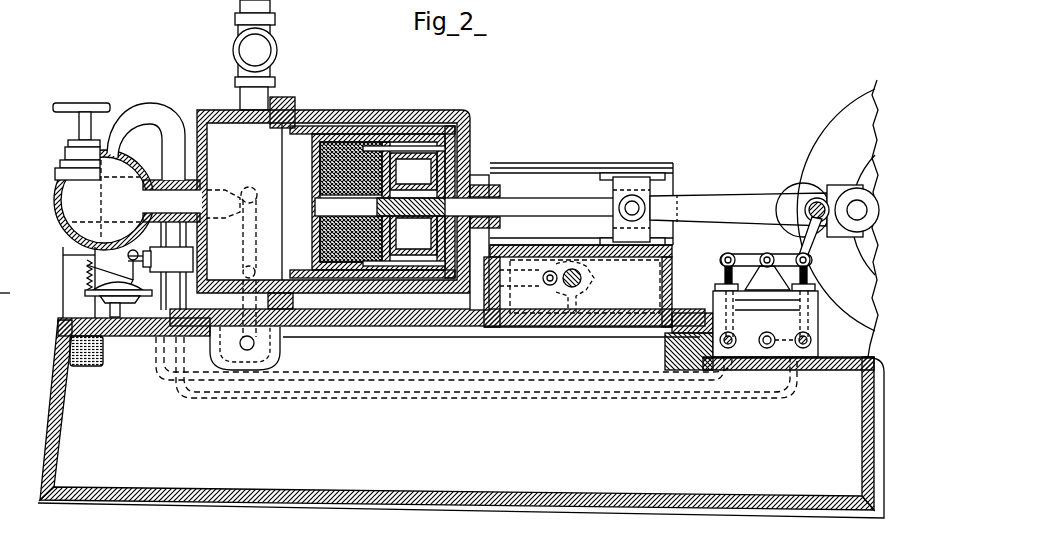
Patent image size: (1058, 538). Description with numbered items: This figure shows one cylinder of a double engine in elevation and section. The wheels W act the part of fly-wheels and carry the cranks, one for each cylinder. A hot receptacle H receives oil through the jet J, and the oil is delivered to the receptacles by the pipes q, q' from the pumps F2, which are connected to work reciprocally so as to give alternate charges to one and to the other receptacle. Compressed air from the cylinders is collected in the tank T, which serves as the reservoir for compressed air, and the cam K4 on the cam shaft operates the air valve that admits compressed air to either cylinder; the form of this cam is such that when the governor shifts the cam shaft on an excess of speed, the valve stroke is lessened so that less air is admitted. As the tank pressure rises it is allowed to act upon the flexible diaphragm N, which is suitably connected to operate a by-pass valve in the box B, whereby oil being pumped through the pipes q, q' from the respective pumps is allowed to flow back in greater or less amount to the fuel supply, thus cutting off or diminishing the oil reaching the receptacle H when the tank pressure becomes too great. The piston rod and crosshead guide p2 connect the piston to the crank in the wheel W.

The hot receptacle H is at (54, 250).
The jet J is at (146, 141).
The flexible diaphragm N is at (85, 296).
The box B is at (160, 259).
The piston rod and crosshead guide p2 is at (537, 202).
The cam K4 is at (578, 286).
The wheel W is at (827, 218).
The pump F2 is at (720, 263).
The pipe q is at (444, 358).
The pipe q' is at (486, 380).
The tank T is at (461, 419).